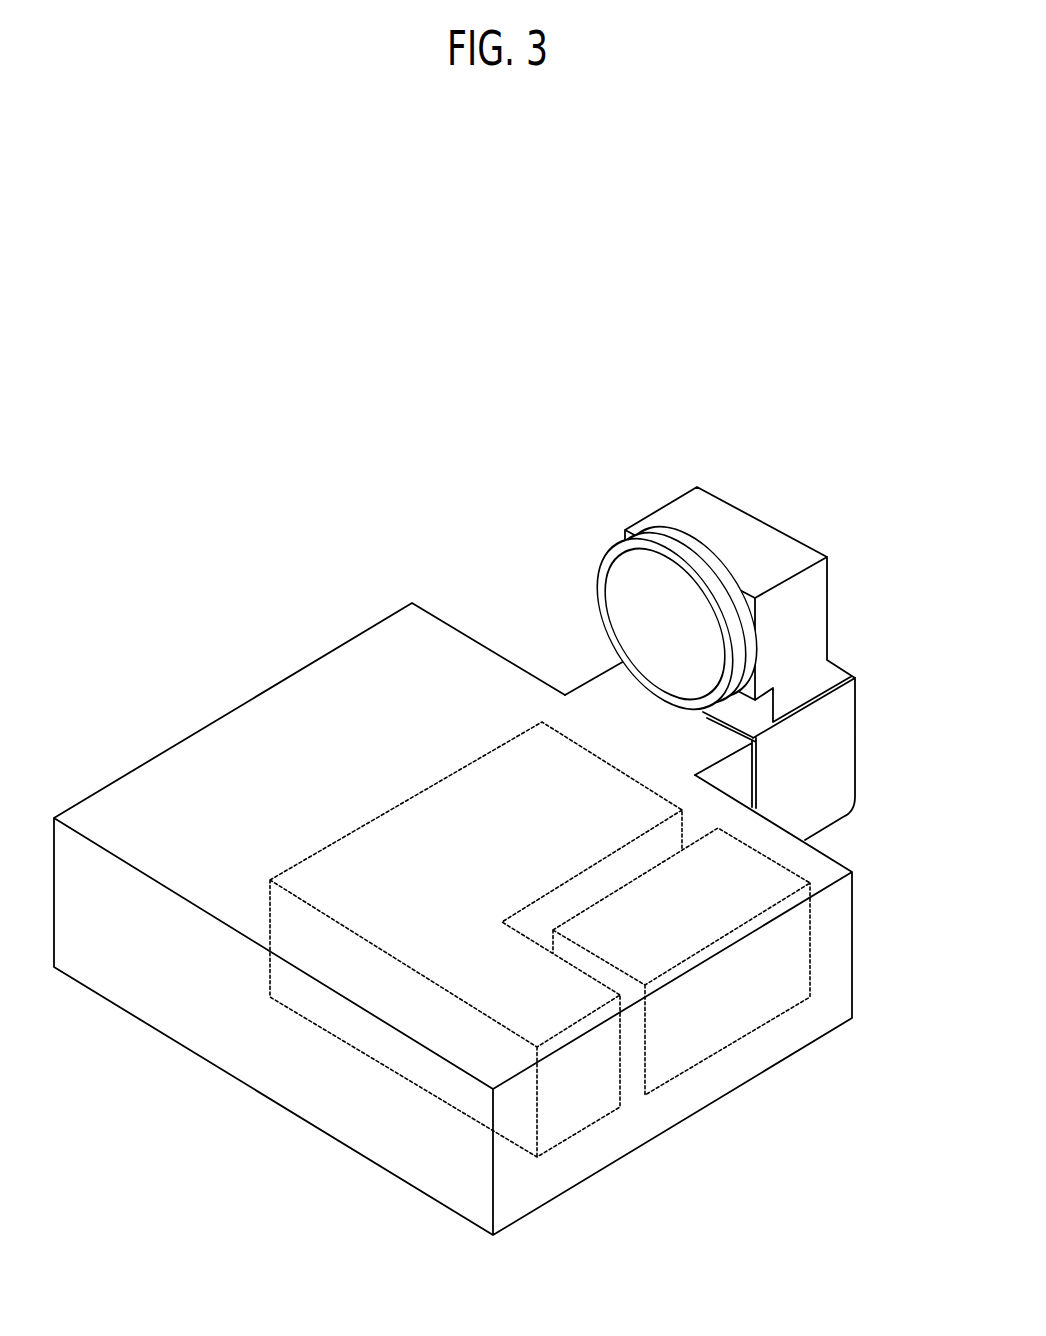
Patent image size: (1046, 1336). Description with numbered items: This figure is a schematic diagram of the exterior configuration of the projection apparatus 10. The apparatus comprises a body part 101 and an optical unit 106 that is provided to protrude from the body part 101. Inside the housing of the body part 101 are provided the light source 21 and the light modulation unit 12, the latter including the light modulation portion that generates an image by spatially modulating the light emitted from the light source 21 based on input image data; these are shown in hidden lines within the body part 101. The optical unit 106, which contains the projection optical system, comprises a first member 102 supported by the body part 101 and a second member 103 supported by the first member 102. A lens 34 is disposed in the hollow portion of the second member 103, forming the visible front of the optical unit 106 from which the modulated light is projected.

The projection apparatus 10 is at (405, 555).
The light modulation unit 12 is at (542, 722).
The light source 21 is at (784, 883).
The lens 34 is at (637, 604).
The body part 101 is at (298, 670).
The first member 102 is at (856, 720).
The second member 103 is at (815, 584).
The optical unit 106 is at (831, 488).